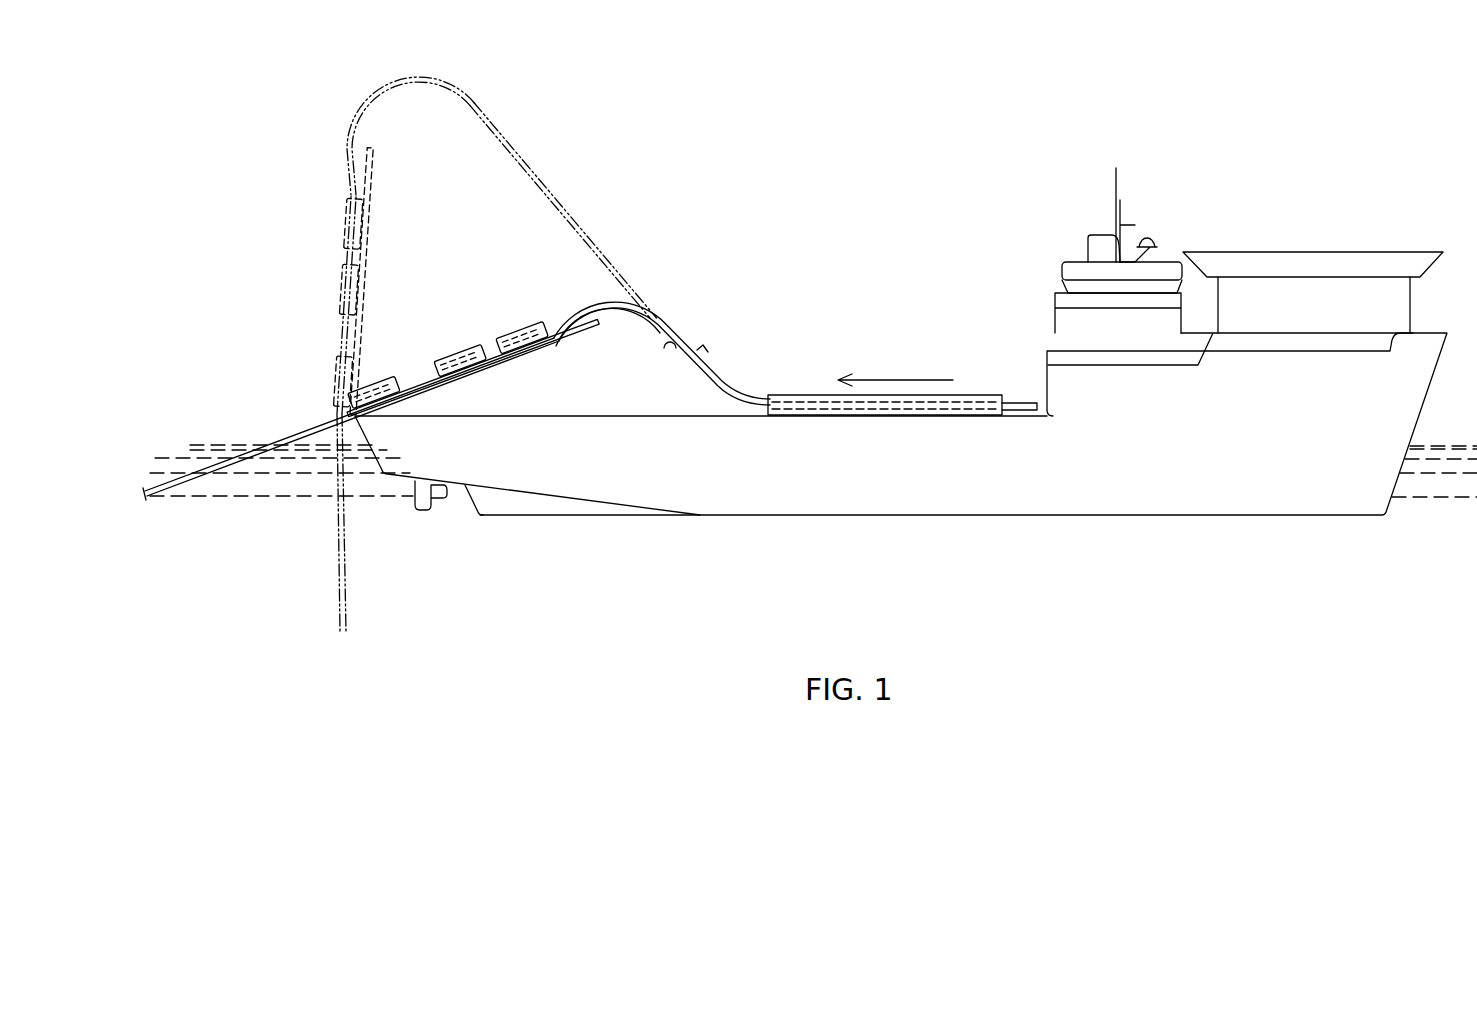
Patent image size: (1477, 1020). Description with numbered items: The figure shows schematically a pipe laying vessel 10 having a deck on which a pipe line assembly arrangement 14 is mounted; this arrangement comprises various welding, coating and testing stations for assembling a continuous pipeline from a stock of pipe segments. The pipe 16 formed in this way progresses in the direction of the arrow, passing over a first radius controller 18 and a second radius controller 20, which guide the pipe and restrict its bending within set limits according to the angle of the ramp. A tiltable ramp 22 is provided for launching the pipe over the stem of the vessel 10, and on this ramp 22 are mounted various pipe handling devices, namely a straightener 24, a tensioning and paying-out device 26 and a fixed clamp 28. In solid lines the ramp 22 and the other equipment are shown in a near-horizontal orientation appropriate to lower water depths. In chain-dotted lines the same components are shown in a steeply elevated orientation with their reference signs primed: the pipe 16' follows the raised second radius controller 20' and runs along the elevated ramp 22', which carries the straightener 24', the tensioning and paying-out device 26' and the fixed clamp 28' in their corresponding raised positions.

The pipe laying vessel 10 is at (1258, 484).
The pipe line assembly arrangement 14 is at (1002, 358).
The pipe 16 is at (490, 442).
The first radius controller 18 is at (724, 380).
The second radius controller 20 is at (631, 333).
The tiltable ramp 22 is at (487, 367).
The straightener 24 is at (522, 309).
The tensioning and paying-out device 26 is at (460, 327).
The fixed clamp 28 is at (383, 369).
The pipe 16' is at (497, 364).
The second radius controller 20' is at (390, 134).
The tiltable ramp 22' is at (400, 280).
The straightener 24' is at (313, 223).
The tensioning and paying-out device 26' is at (310, 289).
The fixed clamp 28' is at (305, 381).